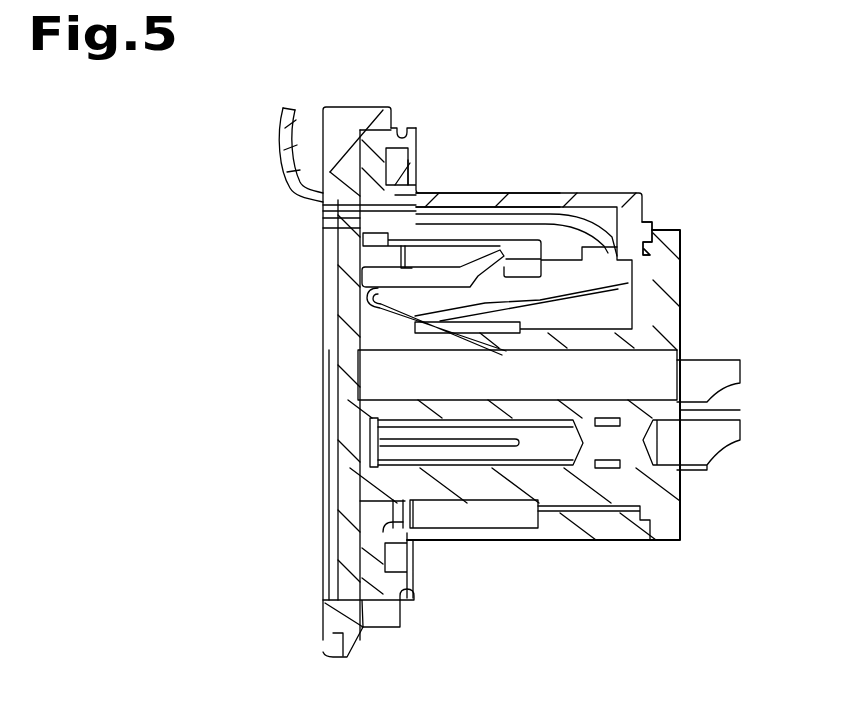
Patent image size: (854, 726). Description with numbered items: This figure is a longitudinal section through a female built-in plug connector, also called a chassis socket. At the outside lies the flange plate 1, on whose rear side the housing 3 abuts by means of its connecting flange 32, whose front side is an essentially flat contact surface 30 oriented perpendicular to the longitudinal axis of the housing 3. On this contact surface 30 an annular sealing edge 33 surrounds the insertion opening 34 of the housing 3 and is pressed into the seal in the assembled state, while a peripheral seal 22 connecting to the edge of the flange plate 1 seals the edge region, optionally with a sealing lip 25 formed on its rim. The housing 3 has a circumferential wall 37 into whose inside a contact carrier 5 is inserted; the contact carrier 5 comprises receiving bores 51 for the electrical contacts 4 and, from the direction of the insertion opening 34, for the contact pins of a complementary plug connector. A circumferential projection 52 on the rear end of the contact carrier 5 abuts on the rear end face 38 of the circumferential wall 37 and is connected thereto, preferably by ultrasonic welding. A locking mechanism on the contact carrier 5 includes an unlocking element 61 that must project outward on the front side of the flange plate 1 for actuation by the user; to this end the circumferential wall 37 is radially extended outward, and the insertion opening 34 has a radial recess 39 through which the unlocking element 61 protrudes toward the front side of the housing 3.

The flange plate 1 is at (348, 118).
The housing 3 is at (565, 213).
The electrical contacts 4 is at (697, 388).
The contact carrier 5 is at (558, 488).
The peripheral seal 22 is at (385, 140).
The sealing lip 25 is at (403, 143).
The contact surface 30 is at (390, 562).
The connecting flange 32 is at (405, 184).
The sealing edge 33 is at (383, 532).
The insertion opening 34 is at (258, 247).
The circumferential wall 37 is at (528, 207).
The rear end face 38 is at (648, 535).
The radial recess 39 is at (300, 190).
The receiving bores 51 is at (354, 447).
The circumferential projection 52 is at (672, 240).
The unlocking element 61 is at (637, 179).